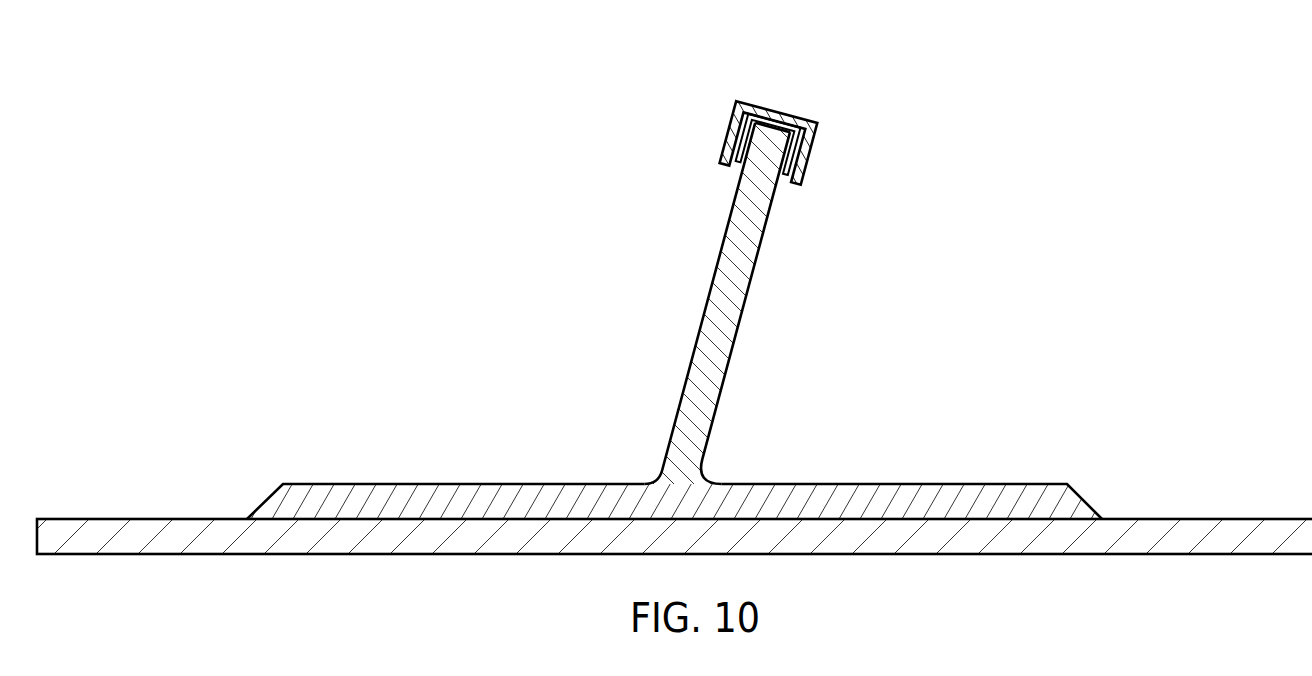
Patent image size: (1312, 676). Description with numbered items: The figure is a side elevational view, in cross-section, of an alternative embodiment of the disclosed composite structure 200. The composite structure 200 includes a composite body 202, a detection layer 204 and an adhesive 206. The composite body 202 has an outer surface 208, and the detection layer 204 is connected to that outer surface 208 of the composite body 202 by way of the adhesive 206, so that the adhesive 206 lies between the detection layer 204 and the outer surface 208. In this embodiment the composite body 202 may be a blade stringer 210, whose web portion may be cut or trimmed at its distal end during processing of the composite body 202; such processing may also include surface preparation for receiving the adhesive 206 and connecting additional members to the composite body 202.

The composite structure 200 is at (975, 117).
The composite body 202 is at (718, 400).
The detection layer 204 is at (809, 156).
The adhesive 206 is at (742, 147).
The outer surface 208 is at (734, 345).
The blade stringer 210 is at (608, 354).